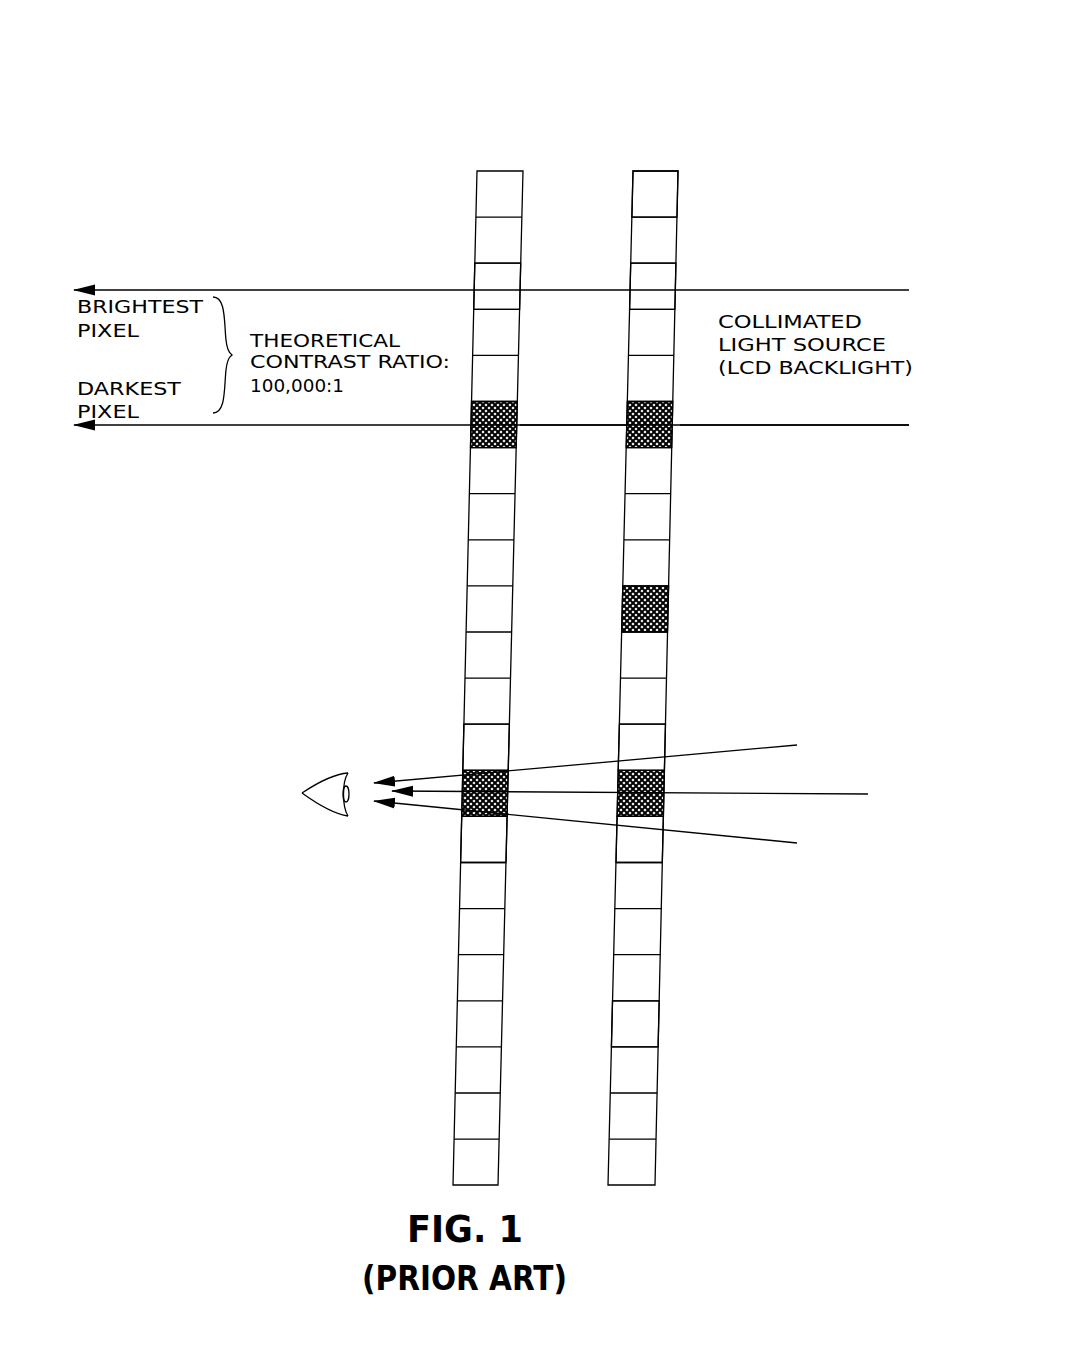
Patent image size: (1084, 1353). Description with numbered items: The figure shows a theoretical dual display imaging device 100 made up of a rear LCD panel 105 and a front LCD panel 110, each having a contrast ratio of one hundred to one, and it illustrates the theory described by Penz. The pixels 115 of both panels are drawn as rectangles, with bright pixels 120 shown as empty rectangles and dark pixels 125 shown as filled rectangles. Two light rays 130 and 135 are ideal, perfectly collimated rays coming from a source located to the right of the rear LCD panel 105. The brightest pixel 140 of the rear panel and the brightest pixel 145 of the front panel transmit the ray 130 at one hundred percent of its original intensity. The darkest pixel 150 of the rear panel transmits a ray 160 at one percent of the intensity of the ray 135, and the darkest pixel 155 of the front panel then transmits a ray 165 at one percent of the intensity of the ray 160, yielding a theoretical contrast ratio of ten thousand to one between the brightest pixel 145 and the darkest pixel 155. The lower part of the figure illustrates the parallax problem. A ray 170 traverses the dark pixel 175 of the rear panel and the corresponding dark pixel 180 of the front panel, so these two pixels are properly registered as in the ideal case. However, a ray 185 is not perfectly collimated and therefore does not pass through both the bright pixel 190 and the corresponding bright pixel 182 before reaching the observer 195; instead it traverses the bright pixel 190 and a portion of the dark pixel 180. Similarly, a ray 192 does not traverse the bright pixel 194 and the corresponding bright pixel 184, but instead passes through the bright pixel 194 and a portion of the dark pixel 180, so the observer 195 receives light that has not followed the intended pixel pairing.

The imaging device 100 is at (584, 112).
The rear LCD panel 105 is at (660, 157).
The front LCD panel 110 is at (500, 160).
The pixels 115 is at (665, 200).
The bright pixels 120 is at (642, 1062).
The dark pixels 125 is at (663, 605).
The light ray 130 is at (222, 290).
The light ray 135 is at (859, 425).
The brightest pixel 140 is at (671, 275).
The brightest pixel 145 is at (480, 274).
The darkest pixel 150 is at (673, 436).
The darkest pixel 155 is at (471, 436).
The ray 160 is at (571, 427).
The ray 165 is at (237, 426).
The ray 170 is at (853, 797).
The dark pixel 175 is at (666, 780).
The dark pixel 180 is at (460, 812).
The bright pixel 182 is at (467, 737).
The bright pixel 184 is at (505, 843).
The ray 185 is at (773, 745).
The bright pixel 190 is at (660, 742).
The ray 192 is at (783, 848).
The bright pixel 194 is at (660, 848).
The observer 195 is at (330, 784).